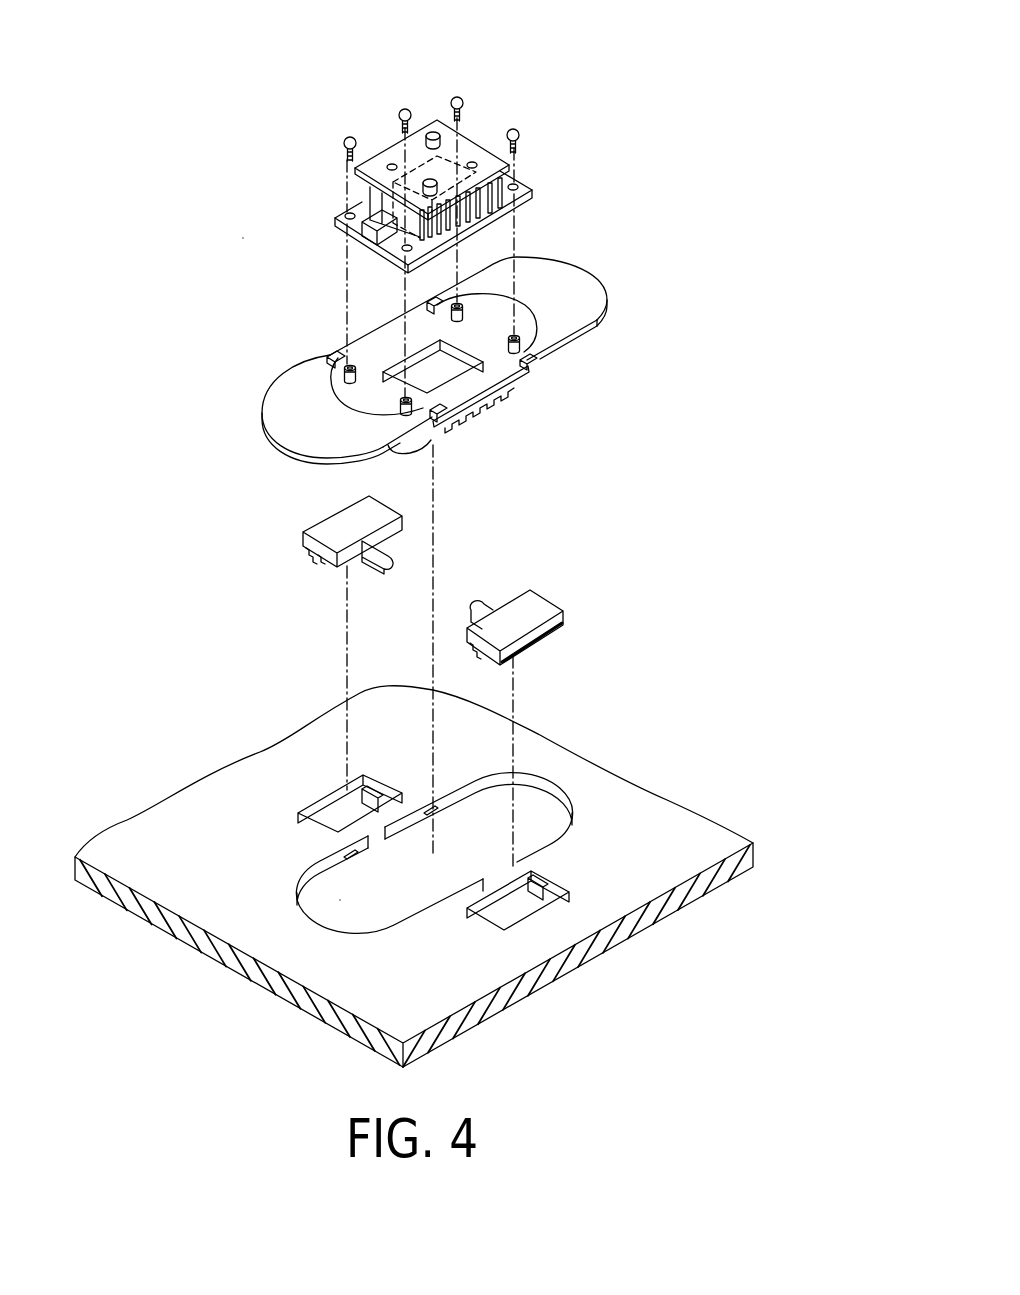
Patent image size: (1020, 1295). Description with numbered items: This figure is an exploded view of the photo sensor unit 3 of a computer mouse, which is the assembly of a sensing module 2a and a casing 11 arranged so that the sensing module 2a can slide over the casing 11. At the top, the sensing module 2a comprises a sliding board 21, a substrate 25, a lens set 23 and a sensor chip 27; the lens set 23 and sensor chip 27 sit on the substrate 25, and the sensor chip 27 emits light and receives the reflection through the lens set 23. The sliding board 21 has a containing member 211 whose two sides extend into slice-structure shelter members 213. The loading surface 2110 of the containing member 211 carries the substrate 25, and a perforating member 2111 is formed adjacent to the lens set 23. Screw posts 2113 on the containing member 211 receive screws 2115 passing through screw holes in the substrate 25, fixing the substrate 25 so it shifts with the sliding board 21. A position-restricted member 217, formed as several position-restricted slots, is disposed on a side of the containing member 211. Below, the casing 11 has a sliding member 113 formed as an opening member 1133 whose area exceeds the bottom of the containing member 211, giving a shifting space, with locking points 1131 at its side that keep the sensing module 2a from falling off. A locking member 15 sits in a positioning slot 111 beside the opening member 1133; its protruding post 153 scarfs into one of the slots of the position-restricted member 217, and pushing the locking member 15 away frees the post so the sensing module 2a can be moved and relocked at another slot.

The photo sensor unit 3 is at (713, 37).
The sensing module 2a is at (240, 236).
The screws 2115 is at (342, 157).
The sensor chip 27 is at (464, 150).
The lens set 23 is at (392, 182).
The substrate 25 is at (533, 186).
The sliding board 21 is at (566, 361).
The shelter member 213 is at (579, 283).
The perforating member 2111 is at (420, 353).
The screw posts 2113 is at (346, 372).
The containing member 211 is at (517, 383).
The loading surface 2110 is at (489, 403).
The position-restricted member 217 is at (467, 418).
The locking member 15 is at (548, 607).
The protruding post 153 is at (481, 603).
The casing 11 is at (683, 823).
The sliding member 113 is at (544, 780).
The locking points 1131 is at (352, 853).
The opening member 1133 is at (370, 897).
The positioning slot 111 is at (534, 910).